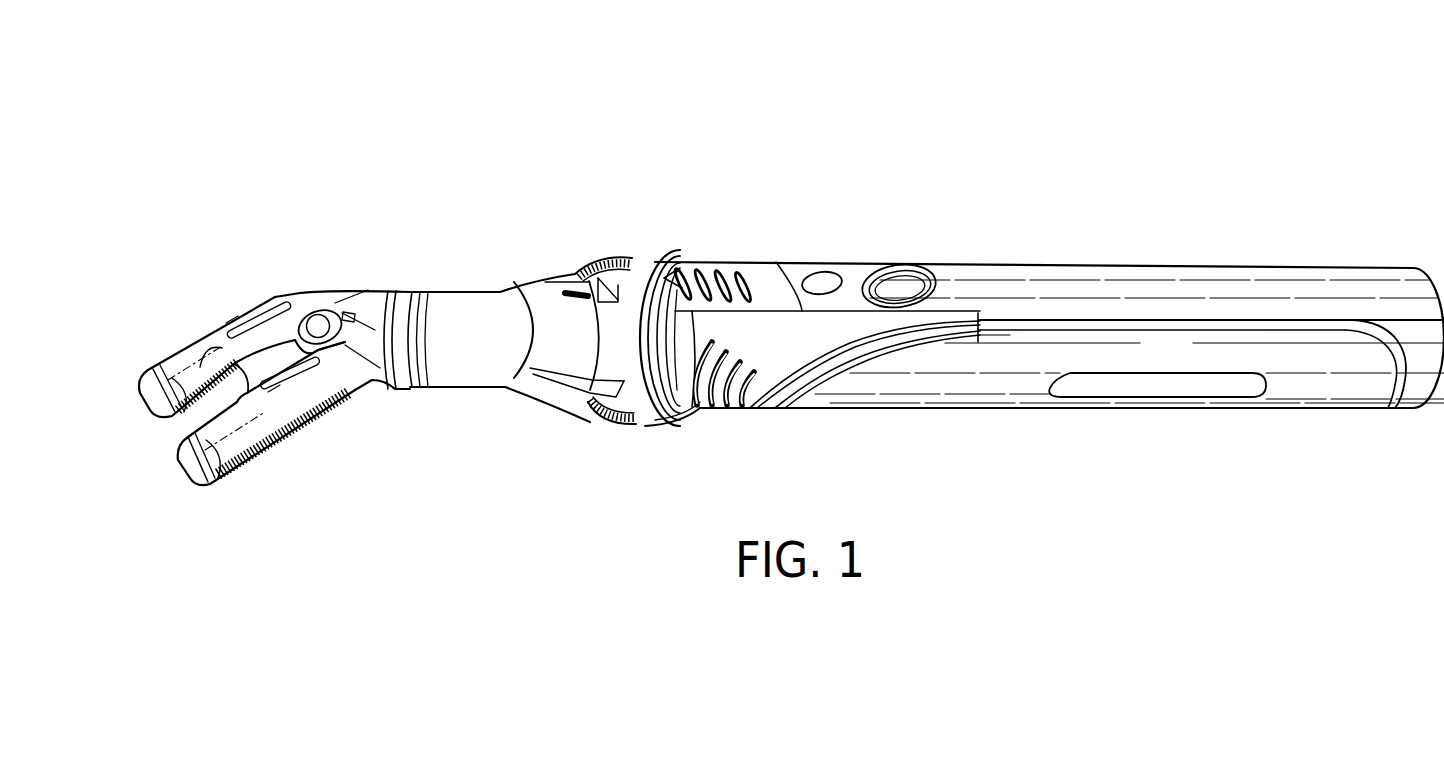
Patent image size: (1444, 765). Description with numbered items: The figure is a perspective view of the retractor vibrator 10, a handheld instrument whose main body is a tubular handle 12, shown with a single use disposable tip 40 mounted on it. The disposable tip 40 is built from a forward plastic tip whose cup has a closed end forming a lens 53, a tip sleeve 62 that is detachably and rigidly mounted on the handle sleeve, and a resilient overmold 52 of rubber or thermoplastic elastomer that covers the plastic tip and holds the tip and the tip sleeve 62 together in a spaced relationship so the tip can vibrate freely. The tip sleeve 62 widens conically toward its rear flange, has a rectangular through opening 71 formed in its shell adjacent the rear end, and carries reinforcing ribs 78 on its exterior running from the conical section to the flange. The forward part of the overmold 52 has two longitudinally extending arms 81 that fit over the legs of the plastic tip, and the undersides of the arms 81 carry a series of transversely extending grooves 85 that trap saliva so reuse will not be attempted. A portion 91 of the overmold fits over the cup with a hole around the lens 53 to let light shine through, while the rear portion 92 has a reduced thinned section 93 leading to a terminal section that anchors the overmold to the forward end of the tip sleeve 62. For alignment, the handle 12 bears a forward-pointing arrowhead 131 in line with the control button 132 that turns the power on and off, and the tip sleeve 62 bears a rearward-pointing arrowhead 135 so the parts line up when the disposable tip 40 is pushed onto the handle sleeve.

The retractor vibrator 10 is at (884, 182).
The handle 12 is at (1053, 292).
The disposable tip 40 is at (474, 252).
The overmold 52 is at (366, 310).
The lens 53 is at (314, 318).
The tip sleeve 62 is at (460, 372).
The rectangular through opening 71 is at (603, 298).
The reinforcing ribs 78 is at (590, 408).
The arms 81 is at (192, 368).
The grooves 85 is at (252, 450).
The portion of the overmold 91 is at (374, 392).
The rear portion 92 is at (420, 390).
The reduced thinned section 93 is at (407, 318).
The arrowhead 131 is at (670, 279).
The control button 132 is at (890, 290).
The arrowhead 135 is at (631, 292).